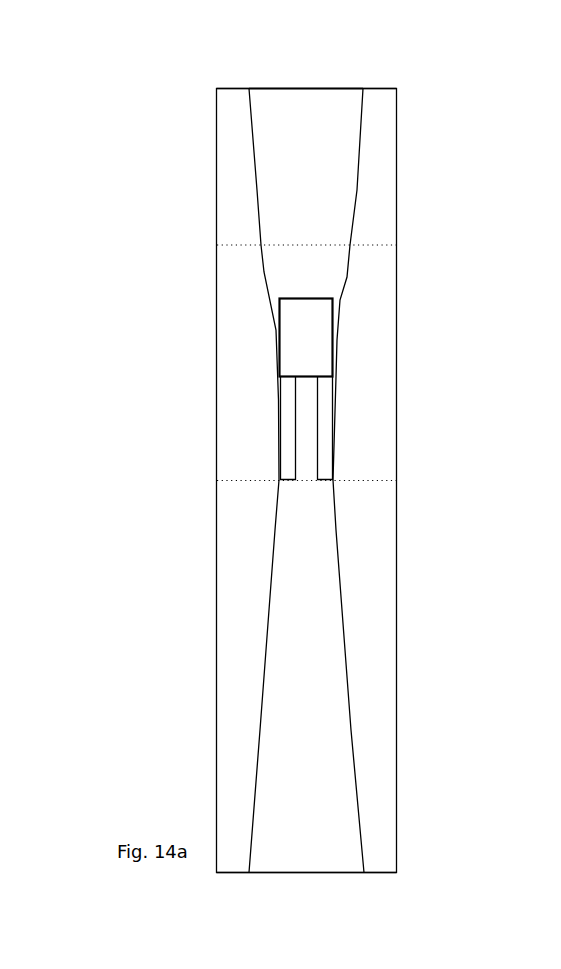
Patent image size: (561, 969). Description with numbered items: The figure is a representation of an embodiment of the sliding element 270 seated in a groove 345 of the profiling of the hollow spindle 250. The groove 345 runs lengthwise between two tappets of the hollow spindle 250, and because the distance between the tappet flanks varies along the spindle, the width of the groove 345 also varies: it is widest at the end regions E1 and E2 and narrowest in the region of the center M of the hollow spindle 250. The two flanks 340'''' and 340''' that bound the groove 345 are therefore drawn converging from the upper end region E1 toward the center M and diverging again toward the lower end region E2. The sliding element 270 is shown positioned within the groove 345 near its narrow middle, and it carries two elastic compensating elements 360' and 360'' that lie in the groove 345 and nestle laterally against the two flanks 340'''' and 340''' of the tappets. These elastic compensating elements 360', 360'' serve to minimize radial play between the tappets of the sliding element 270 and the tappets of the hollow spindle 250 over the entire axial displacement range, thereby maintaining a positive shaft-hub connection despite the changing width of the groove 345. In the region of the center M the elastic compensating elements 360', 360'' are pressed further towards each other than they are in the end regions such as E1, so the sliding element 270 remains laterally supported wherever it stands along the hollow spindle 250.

The hollow spindle 250 is at (201, 373).
The sliding element 270 is at (273, 335).
The groove 345 is at (312, 127).
The flank 340'''' is at (225, 481).
The flank 340''' is at (398, 481).
The elastic compensating element 360' is at (214, 428).
The elastic compensating element 360'' is at (413, 428).
The end region E1 is at (412, 97).
The end region E2 is at (412, 877).
The center M is at (412, 494).